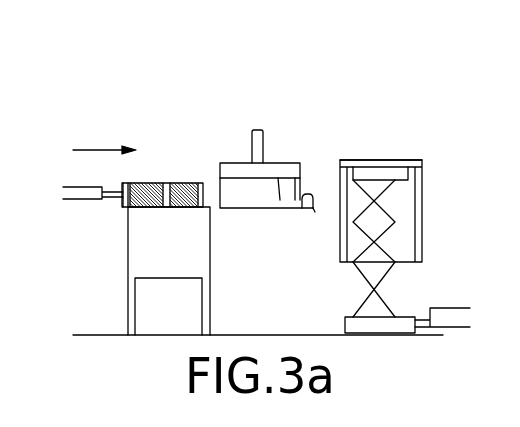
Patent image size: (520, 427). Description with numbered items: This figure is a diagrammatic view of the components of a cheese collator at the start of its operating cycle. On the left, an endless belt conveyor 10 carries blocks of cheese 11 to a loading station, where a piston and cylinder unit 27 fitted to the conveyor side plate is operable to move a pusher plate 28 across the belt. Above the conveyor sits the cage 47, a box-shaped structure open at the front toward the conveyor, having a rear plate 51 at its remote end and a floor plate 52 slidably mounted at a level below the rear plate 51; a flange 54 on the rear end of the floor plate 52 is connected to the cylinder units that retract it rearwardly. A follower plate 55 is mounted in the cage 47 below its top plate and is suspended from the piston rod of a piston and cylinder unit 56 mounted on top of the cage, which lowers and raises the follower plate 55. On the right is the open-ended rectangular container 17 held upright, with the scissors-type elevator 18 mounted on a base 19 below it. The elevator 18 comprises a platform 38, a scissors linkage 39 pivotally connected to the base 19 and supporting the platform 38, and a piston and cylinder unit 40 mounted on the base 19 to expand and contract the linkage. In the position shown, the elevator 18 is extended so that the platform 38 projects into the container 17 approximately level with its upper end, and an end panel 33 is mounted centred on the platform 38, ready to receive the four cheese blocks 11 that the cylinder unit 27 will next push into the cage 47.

The endless belt conveyor 10 is at (211, 288).
The blocks of cheese 11 is at (183, 183).
The open-ended rectangular container 17 is at (422, 228).
The scissors-type elevator 18 is at (385, 283).
The base 19 is at (363, 333).
The piston and cylinder unit 27 is at (83, 191).
The pusher plate 28 is at (127, 207).
The end panel 33 is at (382, 160).
The platform 38 is at (417, 172).
The scissors linkage 39 is at (387, 213).
The piston and cylinder unit 40 is at (445, 310).
The cage 47 is at (275, 162).
The rear plate 51 is at (305, 190).
The floor plate 52 is at (248, 208).
The flange 54 is at (315, 210).
The follower plate 55 is at (280, 200).
The piston and cylinder unit 56 is at (263, 138).